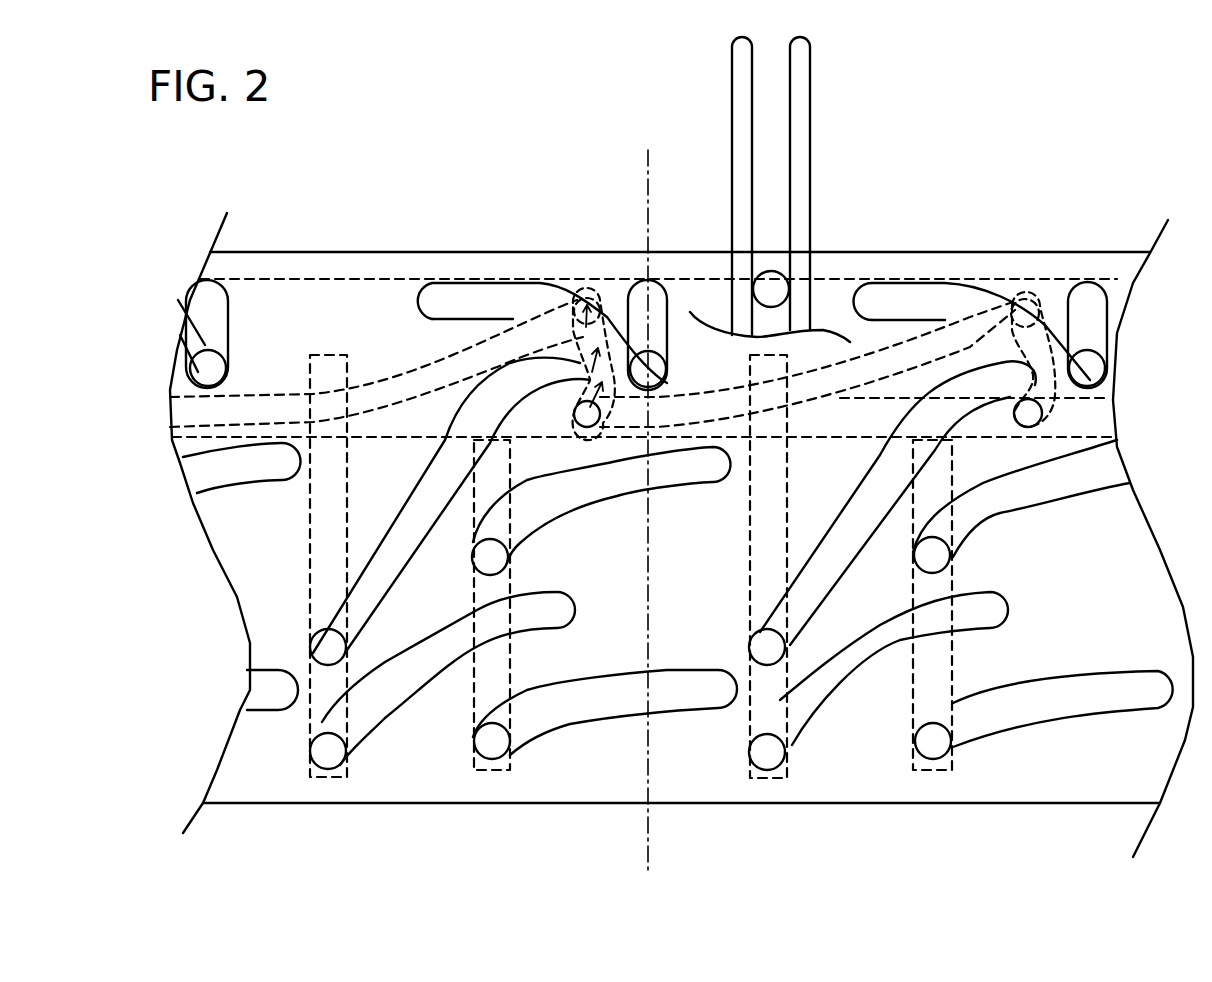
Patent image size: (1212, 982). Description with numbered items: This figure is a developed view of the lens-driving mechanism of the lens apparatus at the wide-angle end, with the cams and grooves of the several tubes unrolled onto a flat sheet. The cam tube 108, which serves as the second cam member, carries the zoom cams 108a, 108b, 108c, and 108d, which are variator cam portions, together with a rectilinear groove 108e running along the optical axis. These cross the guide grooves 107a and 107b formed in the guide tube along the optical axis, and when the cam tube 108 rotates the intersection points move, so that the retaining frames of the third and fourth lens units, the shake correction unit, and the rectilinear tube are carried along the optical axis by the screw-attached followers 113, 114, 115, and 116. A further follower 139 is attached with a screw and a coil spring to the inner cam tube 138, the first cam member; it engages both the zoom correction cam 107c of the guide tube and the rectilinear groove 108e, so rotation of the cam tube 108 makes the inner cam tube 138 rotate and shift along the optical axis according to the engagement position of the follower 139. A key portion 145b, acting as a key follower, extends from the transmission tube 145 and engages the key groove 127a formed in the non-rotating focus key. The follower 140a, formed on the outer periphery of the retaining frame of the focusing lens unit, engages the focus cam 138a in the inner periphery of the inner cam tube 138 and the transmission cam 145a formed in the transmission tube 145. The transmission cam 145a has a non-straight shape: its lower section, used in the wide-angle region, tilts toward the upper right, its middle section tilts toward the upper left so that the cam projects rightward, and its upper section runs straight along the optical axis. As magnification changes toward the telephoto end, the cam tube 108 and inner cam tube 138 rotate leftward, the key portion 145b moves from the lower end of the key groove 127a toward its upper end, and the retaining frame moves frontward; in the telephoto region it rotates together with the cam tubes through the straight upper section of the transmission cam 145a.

The cam tube 108 is at (697, 790).
The zoom cam 108a is at (363, 737).
The zoom cam 108b is at (693, 487).
The zoom cam 108c is at (593, 720).
The zoom cam 108d is at (385, 520).
The rectilinear groove 108e is at (670, 310).
The guide groove 107a is at (310, 573).
The guide groove 107b is at (473, 693).
The zoom correction cam 107c is at (448, 290).
The follower 113 is at (323, 760).
The follower 114 is at (497, 558).
The follower 115 is at (507, 757).
The follower 116 is at (317, 650).
The key groove 127a is at (783, 113).
The inner cam tube 138 is at (340, 280).
The transmission tube 145 is at (807, 364).
The focus cam 138a is at (913, 340).
The follower 139 is at (660, 370).
The follower 140a is at (575, 405).
The transmission cam 145a is at (612, 300).
The key portion 145b is at (772, 268).